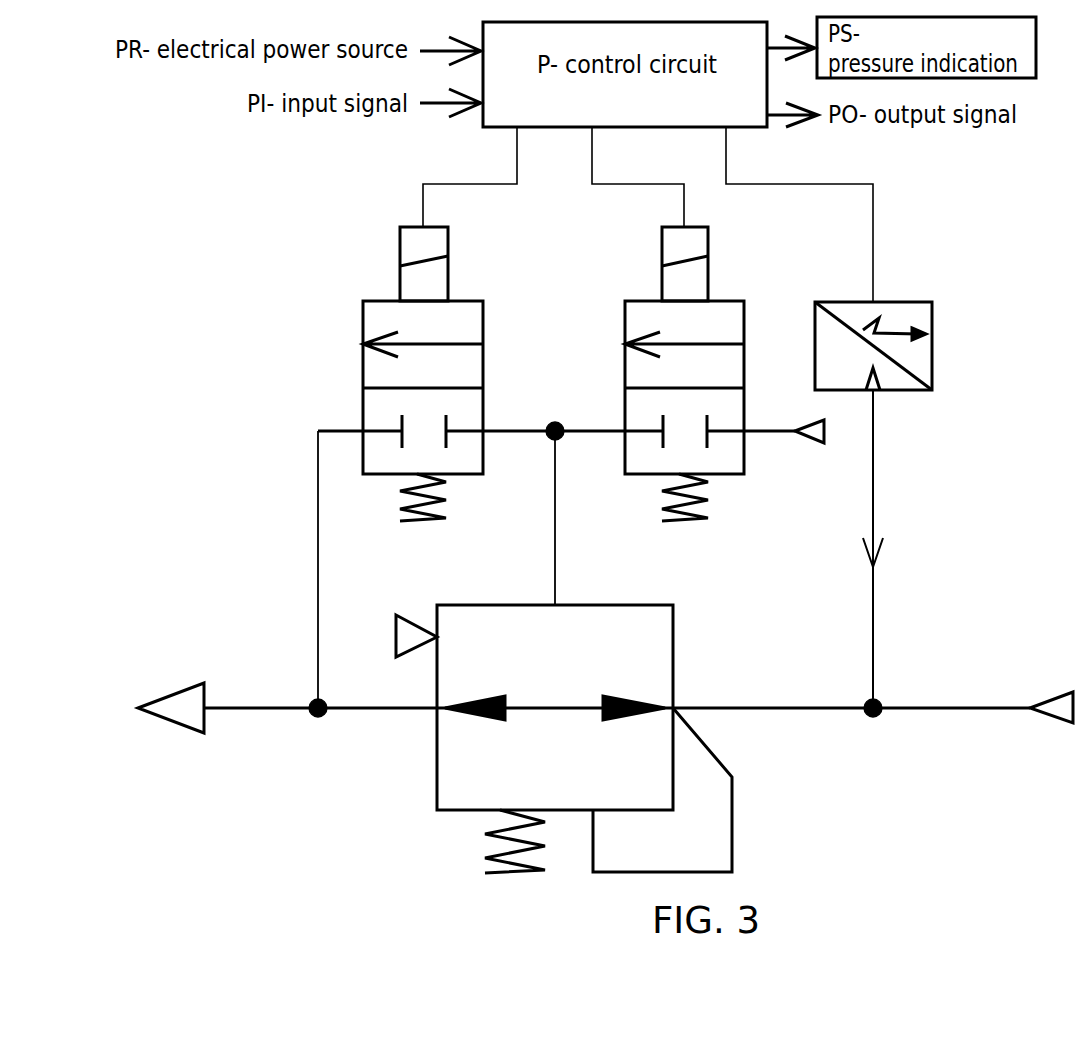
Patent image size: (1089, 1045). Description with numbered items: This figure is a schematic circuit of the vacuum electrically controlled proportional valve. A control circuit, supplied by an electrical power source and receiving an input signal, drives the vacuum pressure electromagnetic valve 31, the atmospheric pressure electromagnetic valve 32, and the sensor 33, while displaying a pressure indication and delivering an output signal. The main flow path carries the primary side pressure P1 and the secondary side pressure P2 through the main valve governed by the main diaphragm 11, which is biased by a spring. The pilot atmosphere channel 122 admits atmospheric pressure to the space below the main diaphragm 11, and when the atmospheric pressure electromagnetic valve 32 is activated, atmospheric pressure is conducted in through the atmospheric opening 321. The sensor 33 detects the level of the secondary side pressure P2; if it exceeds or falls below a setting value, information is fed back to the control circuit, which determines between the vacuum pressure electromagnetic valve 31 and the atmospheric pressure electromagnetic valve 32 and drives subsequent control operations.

The main diaphragm 11 is at (617, 604).
The pilot atmosphere channel 122 is at (415, 622).
The vacuum pressure electromagnetic valve 31 is at (363, 312).
The atmospheric pressure electromagnetic valve 32 is at (625, 312).
The atmospheric opening 321 is at (798, 444).
The sensor 33 is at (933, 345).
The primary side pressure P1 is at (318, 717).
The secondary side pressure P2 is at (873, 717).